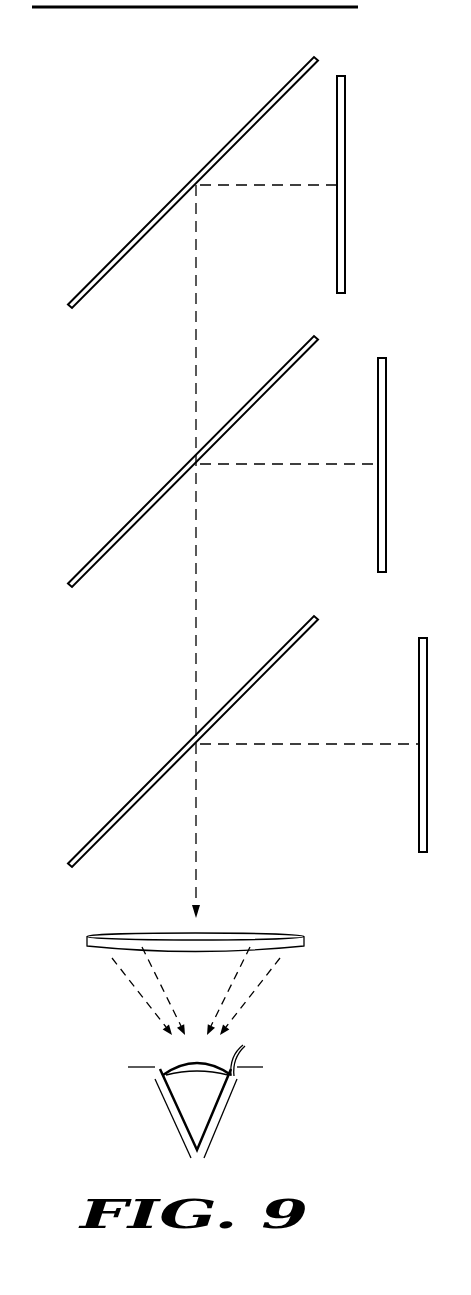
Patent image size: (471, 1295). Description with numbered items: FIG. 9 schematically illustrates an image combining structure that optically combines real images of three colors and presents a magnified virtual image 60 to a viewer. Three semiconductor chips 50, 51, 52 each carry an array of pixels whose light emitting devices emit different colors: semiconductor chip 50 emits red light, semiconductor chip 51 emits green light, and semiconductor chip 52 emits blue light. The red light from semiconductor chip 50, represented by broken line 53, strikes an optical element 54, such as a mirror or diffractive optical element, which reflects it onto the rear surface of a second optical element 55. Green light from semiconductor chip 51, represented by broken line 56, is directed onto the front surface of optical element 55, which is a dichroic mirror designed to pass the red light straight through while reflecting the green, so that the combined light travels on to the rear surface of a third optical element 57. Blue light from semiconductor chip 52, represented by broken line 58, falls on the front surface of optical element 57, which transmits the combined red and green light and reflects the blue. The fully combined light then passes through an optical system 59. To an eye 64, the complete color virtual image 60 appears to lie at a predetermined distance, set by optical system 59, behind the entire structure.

The virtual image 60 is at (87, 8).
The semiconductor chip 50 is at (336, 265).
The semiconductor chip 51 is at (377, 545).
The semiconductor chip 52 is at (418, 825).
The broken line 53 is at (212, 185).
The broken line 56 is at (212, 464).
The broken line 58 is at (212, 744).
The optical element 54 is at (102, 276).
The second optical element 55 is at (102, 555).
The third optical element 57 is at (102, 835).
The optical system 59 is at (277, 933).
The eye 64 is at (263, 1123).